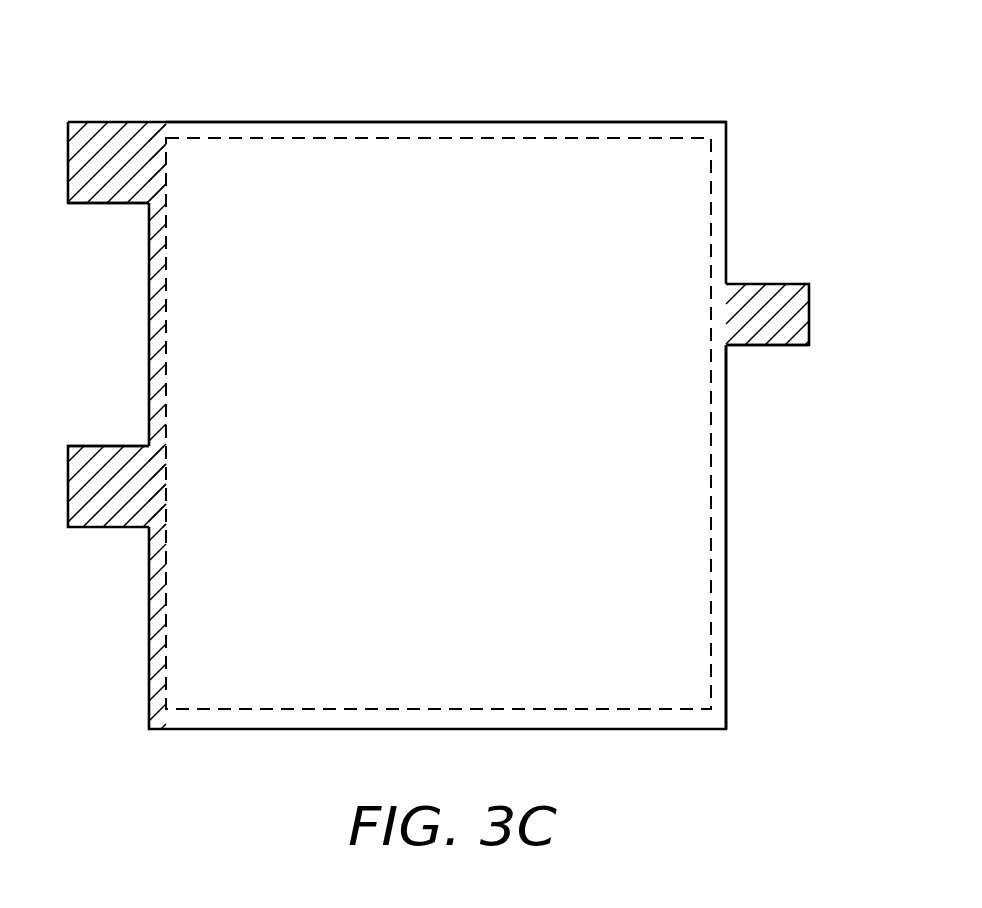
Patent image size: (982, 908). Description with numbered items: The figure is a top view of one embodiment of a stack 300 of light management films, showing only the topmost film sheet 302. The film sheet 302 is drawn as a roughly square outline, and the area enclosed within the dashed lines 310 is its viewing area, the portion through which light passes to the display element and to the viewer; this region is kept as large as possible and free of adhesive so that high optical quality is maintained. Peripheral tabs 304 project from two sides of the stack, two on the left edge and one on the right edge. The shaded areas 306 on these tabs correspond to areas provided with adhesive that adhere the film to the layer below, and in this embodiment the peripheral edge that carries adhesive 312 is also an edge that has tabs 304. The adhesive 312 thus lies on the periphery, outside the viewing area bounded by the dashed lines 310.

The stack of films 300 is at (333, 730).
The topmost film sheet 302 is at (727, 453).
The peripheral tabs 304 is at (96, 205).
The adhesive areas 306 is at (108, 132).
The dashed lines 310 is at (338, 137).
The adhesive 312 is at (505, 122).